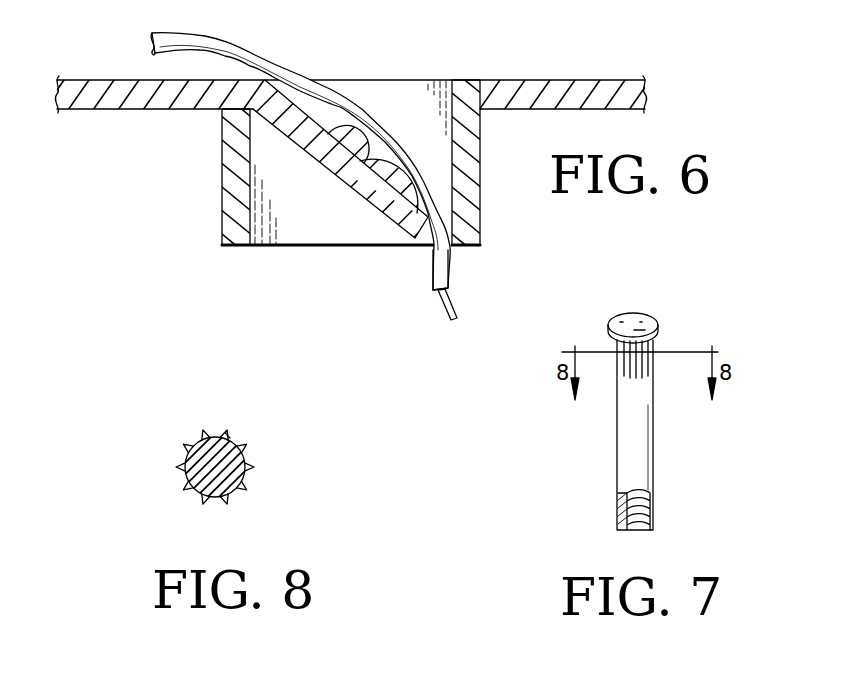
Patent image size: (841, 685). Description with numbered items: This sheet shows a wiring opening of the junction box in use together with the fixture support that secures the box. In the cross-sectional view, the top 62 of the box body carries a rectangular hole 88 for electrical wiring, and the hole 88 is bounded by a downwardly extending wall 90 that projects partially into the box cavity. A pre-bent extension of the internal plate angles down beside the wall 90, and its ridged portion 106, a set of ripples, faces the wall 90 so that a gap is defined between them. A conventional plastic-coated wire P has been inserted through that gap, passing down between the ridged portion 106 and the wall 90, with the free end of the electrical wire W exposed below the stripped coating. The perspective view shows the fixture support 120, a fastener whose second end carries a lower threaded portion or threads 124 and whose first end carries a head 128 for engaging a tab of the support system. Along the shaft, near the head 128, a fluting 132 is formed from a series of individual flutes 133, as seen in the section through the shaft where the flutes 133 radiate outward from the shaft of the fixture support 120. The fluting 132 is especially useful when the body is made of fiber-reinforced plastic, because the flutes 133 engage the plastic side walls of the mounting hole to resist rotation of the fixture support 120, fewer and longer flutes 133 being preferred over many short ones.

In FIG. 6, the top 62 is at (540, 80).
In FIG. 6, the hole 88 is at (390, 92).
In FIG. 6, the downwardly extending wall 90 is at (222, 186).
In FIG. 6, the ridged portion 106 is at (342, 172).
In FIG. 6, the plastic-coated wire P is at (445, 270).
In FIG. 6, the electrical wire W is at (457, 308).
In FIG. 7, the fixture support 120 is at (622, 453).
In FIG. 8, the fixture support 120 is at (250, 458).
In FIG. 7, the head 128 is at (633, 322).
In FIG. 7, the fluting 132 is at (640, 368).
In FIG. 8, the fluting 132 is at (214, 418).
In FIG. 7, the threads 124 is at (637, 530).
In FIG. 8, the flutes 133 is at (188, 447).